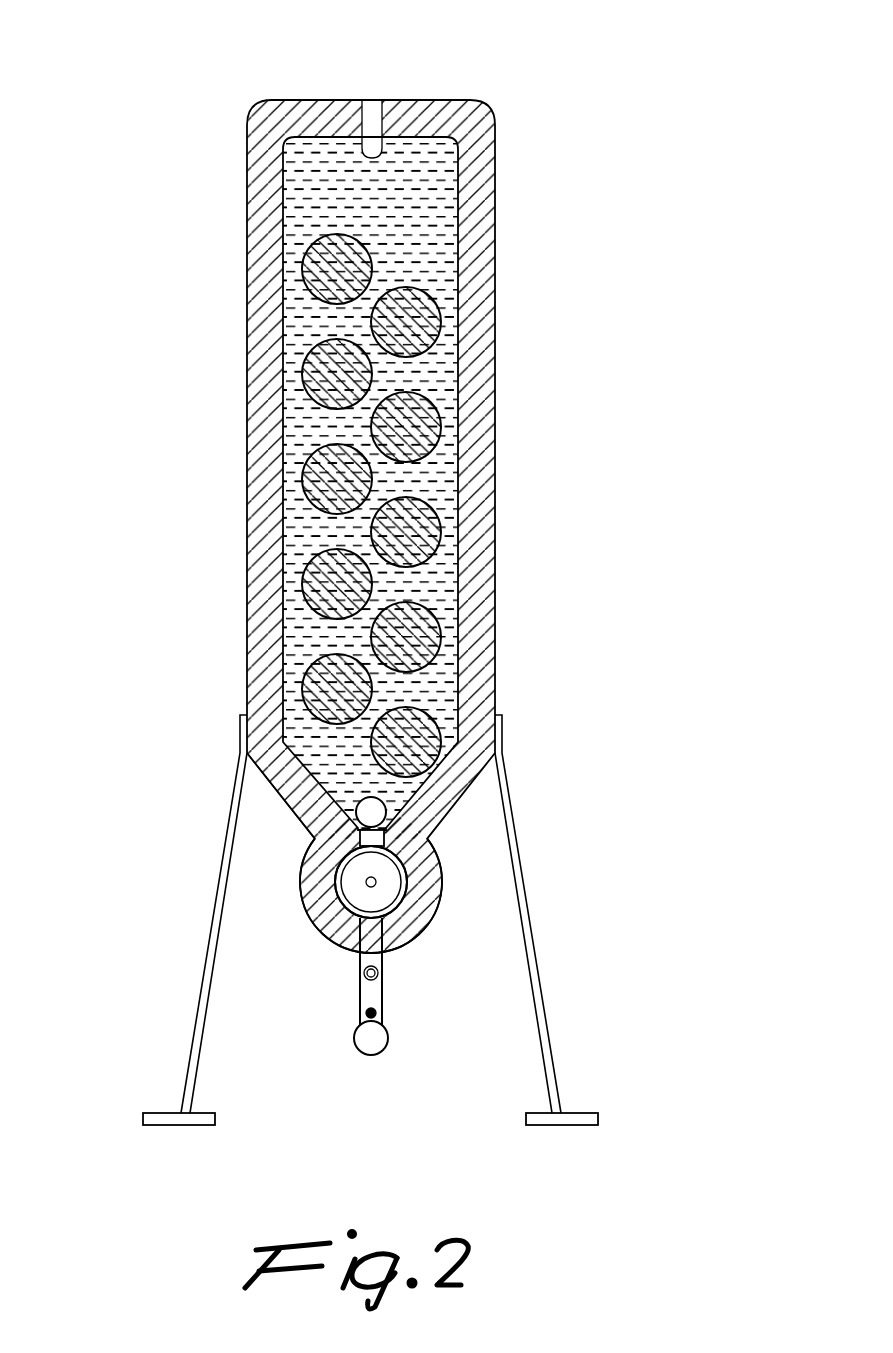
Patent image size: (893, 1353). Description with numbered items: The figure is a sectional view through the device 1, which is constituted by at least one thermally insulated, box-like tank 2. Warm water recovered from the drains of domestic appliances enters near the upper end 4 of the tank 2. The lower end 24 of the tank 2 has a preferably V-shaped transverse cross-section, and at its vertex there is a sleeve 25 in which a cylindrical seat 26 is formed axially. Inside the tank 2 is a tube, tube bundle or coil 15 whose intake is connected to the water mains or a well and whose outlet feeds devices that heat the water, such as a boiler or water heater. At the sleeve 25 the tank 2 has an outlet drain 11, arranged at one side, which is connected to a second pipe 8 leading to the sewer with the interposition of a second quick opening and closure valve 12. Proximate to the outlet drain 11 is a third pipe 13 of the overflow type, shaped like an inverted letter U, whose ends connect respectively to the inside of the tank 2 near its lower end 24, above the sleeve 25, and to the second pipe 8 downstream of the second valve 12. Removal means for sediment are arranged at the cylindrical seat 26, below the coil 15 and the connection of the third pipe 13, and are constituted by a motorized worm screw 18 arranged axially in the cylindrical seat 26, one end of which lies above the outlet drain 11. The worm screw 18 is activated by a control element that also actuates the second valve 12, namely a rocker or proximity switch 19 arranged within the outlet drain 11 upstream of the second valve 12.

The device 1 is at (150, 176).
The tank 2 is at (486, 98).
The upper end 4 is at (372, 88).
The second pipe 8 is at (374, 1042).
The outlet drain 11 is at (372, 928).
The second valve 12 is at (376, 1013).
The third pipe 13 is at (376, 810).
The coil 15 is at (326, 376).
The worm screw 18 is at (375, 879).
The proximity switch 19 is at (380, 975).
The lower end 24 is at (272, 798).
The sleeve 25 is at (325, 941).
The cylindrical seat 26 is at (330, 878).